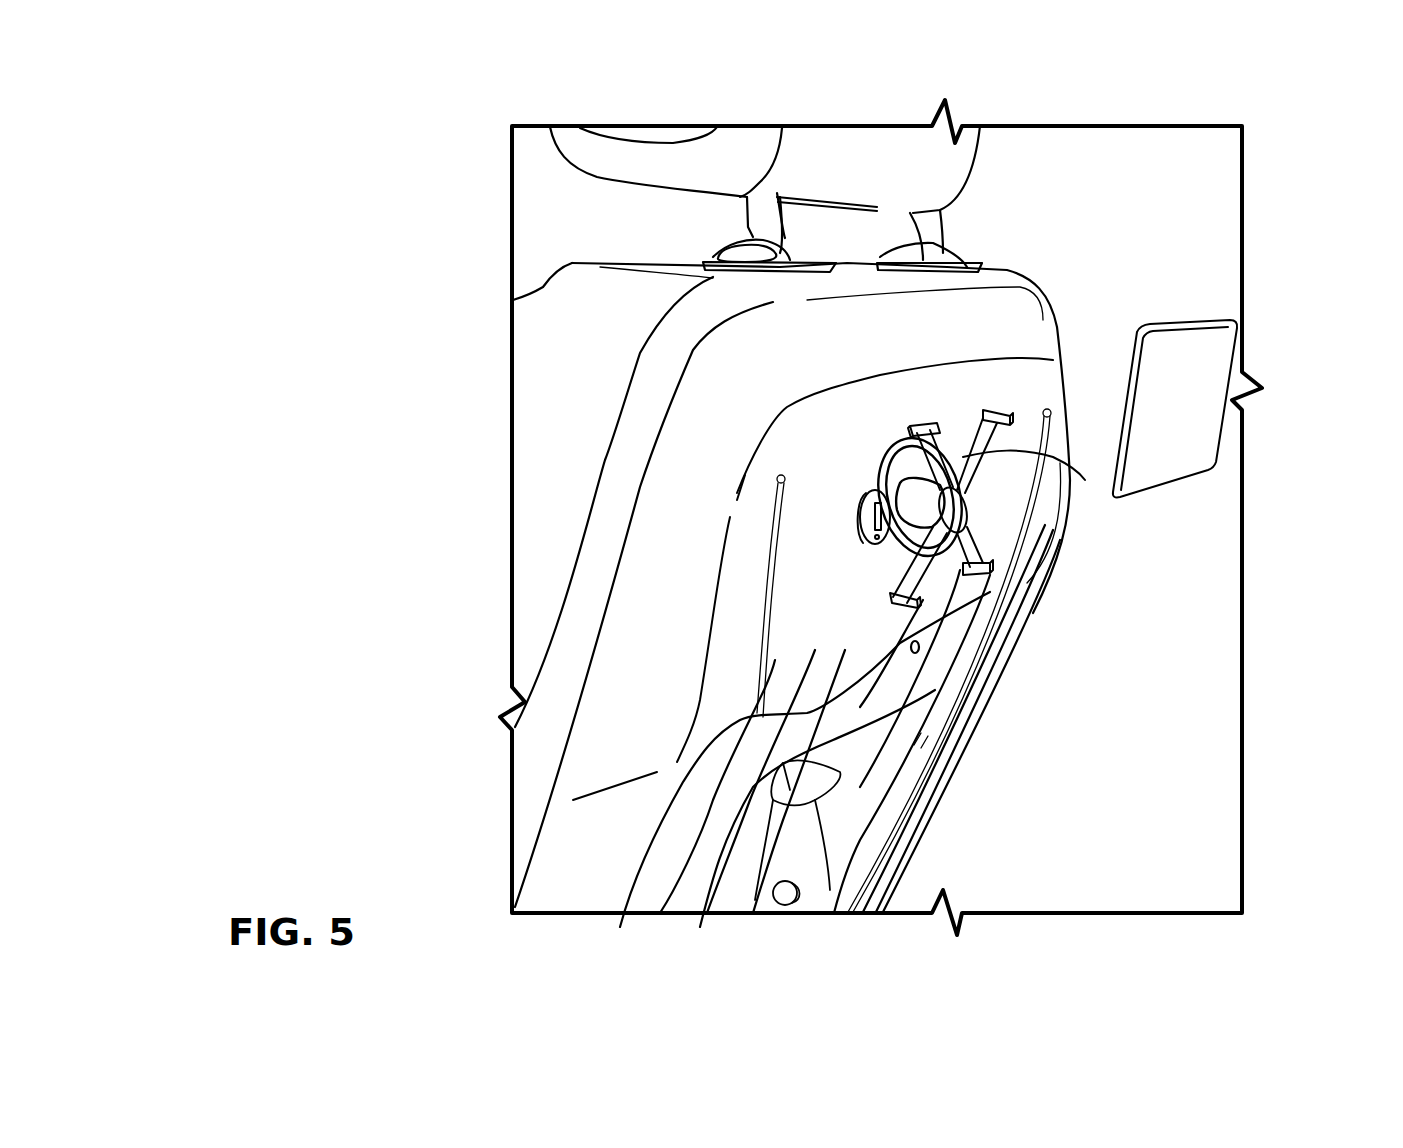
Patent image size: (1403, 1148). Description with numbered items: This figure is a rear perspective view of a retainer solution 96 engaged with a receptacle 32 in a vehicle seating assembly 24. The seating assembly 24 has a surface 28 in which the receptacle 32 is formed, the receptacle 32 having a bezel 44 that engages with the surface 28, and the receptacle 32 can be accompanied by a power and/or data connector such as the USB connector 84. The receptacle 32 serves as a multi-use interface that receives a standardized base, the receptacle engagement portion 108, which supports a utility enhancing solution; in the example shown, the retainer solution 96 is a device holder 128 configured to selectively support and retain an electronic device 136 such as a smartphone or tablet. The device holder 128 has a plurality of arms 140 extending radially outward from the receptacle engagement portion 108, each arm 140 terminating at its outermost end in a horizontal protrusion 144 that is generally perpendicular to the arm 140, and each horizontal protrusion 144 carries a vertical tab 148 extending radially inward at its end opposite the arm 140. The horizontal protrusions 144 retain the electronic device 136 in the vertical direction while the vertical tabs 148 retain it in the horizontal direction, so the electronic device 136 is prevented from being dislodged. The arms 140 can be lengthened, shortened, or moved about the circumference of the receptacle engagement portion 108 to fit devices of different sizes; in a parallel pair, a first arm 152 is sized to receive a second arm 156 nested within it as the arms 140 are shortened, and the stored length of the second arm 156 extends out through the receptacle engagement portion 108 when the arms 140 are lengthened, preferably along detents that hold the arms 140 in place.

The vehicle seating assembly 24 is at (455, 240).
The surface 28 is at (990, 317).
The receptacle 32 is at (880, 460).
The bezel 44 is at (880, 557).
The USB connector 84 is at (855, 510).
The retainer solution 96 is at (1012, 440).
The receptacle engagement portion 108 is at (890, 472).
The device holder 128 is at (927, 412).
The electronic device 136 is at (1190, 433).
The arms 140 is at (993, 397).
The horizontal protrusion 144 is at (942, 447).
The vertical tab 148 is at (1020, 397).
The first arm 152 is at (910, 413).
The second arm 156 is at (1000, 545).